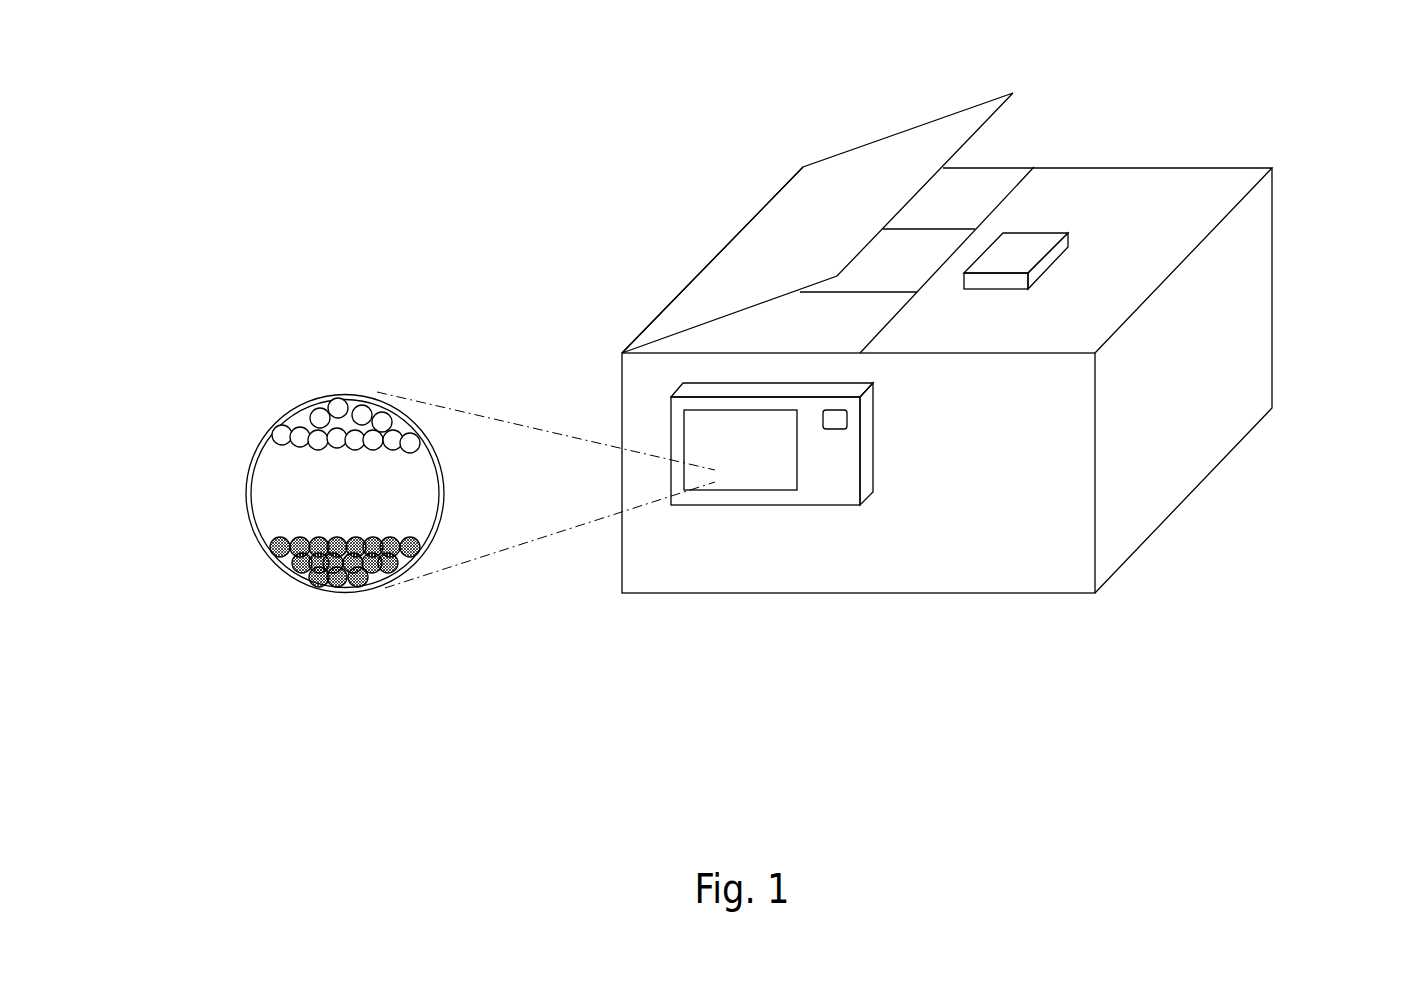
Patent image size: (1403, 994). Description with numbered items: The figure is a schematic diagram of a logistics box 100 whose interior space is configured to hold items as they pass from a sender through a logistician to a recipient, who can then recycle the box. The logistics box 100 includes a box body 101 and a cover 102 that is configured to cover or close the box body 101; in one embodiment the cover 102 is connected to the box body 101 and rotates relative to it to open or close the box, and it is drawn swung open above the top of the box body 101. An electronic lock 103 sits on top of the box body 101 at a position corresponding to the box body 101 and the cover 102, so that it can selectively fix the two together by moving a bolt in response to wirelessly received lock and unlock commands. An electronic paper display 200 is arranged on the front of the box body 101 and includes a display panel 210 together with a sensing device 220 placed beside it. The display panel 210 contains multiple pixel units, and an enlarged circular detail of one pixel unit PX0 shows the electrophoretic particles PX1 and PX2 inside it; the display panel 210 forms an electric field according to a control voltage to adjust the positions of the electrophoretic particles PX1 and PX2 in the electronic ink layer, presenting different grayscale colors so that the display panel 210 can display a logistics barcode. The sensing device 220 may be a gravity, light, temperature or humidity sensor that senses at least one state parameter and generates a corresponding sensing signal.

The logistics box 100 is at (1347, 61).
The box body 101 is at (1250, 345).
The cover 102 is at (890, 162).
The electronic lock 103 is at (1029, 246).
The electronic paper display 200 is at (658, 413).
The display panel 210 is at (752, 470).
The sensing device 220 is at (837, 420).
The pixel unit PX0 is at (328, 382).
The electrophoretic particles PX1 is at (280, 445).
The electrophoretic particles PX2 is at (277, 557).